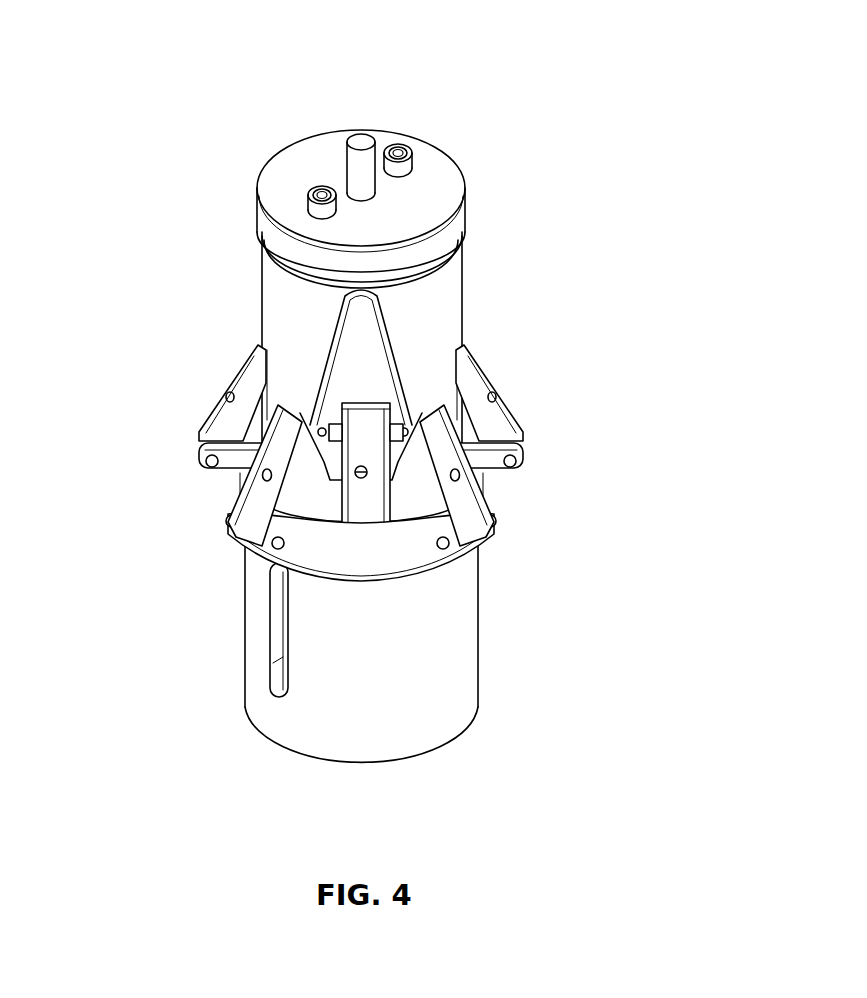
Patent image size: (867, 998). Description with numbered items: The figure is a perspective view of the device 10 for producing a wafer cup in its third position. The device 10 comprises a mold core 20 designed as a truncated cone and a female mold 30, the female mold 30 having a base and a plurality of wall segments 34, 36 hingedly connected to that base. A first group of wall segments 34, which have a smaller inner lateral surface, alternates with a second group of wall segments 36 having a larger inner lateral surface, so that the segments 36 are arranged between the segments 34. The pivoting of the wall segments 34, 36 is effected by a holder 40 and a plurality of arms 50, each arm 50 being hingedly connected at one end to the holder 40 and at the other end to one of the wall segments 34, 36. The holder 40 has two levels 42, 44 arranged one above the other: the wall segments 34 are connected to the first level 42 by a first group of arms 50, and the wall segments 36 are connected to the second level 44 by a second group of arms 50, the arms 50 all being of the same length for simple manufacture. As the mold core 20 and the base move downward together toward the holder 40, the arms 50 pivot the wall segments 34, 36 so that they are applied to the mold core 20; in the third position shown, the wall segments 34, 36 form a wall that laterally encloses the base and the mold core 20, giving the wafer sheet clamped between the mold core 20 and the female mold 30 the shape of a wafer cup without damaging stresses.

The device for producing a wafer cup 10 is at (120, 134).
The mold core 20 is at (440, 137).
The female mold 30 is at (232, 649).
The wall segments 34 is at (378, 368).
The wall segments 36 is at (310, 338).
The holder 40 is at (377, 735).
The first level 42 is at (207, 462).
The second level 44 is at (240, 535).
The arms 50 is at (505, 417).